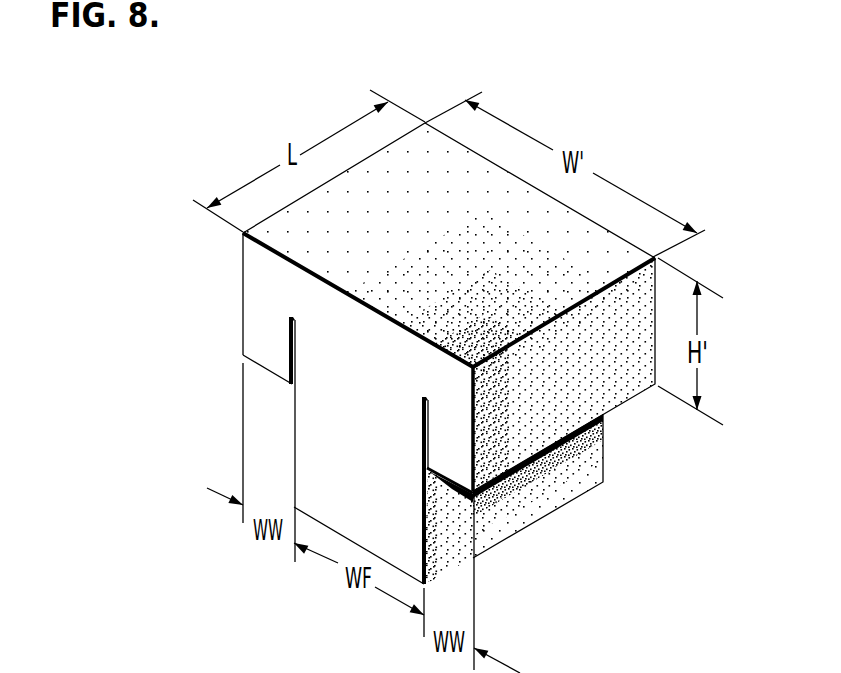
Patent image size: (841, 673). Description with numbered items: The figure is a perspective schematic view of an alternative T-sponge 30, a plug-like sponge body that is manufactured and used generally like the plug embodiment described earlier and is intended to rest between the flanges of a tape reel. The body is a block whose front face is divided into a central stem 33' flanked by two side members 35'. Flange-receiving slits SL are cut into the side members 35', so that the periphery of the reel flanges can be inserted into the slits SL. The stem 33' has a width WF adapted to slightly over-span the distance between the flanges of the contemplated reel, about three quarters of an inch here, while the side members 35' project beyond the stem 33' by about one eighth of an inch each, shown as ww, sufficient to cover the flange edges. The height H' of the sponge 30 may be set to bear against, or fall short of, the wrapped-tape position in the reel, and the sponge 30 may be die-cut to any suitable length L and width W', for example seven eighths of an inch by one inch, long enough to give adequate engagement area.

The T-sponge 30 is at (515, 98).
The stem 33' is at (359, 452).
The side members 35' is at (358, 404).
The slits SL is at (293, 367).